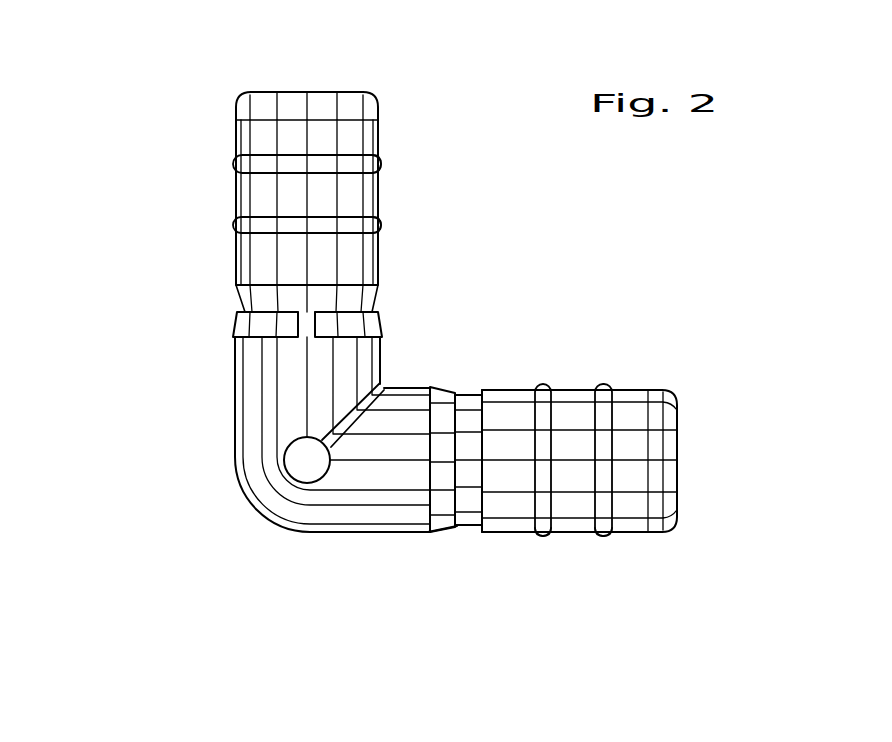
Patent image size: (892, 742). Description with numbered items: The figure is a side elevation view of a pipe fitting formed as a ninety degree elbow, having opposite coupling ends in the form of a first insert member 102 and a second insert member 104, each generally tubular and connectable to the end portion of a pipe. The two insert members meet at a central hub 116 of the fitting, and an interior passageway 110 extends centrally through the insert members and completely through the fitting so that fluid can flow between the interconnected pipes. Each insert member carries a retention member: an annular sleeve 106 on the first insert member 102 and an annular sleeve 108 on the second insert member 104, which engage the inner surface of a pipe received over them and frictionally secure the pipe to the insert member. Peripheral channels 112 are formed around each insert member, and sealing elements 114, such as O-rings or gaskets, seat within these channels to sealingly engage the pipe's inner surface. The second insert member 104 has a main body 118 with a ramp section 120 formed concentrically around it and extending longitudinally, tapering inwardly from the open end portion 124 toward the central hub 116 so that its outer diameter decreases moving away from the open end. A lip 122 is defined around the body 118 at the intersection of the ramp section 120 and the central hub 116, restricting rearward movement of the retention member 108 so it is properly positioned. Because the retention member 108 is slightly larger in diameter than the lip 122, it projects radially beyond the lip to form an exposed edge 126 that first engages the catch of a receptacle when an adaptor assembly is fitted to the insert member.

The first insert member 102 is at (230, 119).
The second insert member 104 is at (661, 391).
The annular sleeve 106 is at (231, 332).
The annular sleeve 108 is at (436, 538).
The interior passageway 110 is at (313, 92).
The peripheral channel 112 is at (381, 230).
The sealing element 114 is at (262, 228).
The central hub 116 is at (278, 510).
The main body 118 is at (507, 519).
The ramp section 120 is at (470, 528).
The lip 122 is at (433, 479).
The open end portion 124 is at (678, 472).
The exposed edge 126 is at (423, 388).